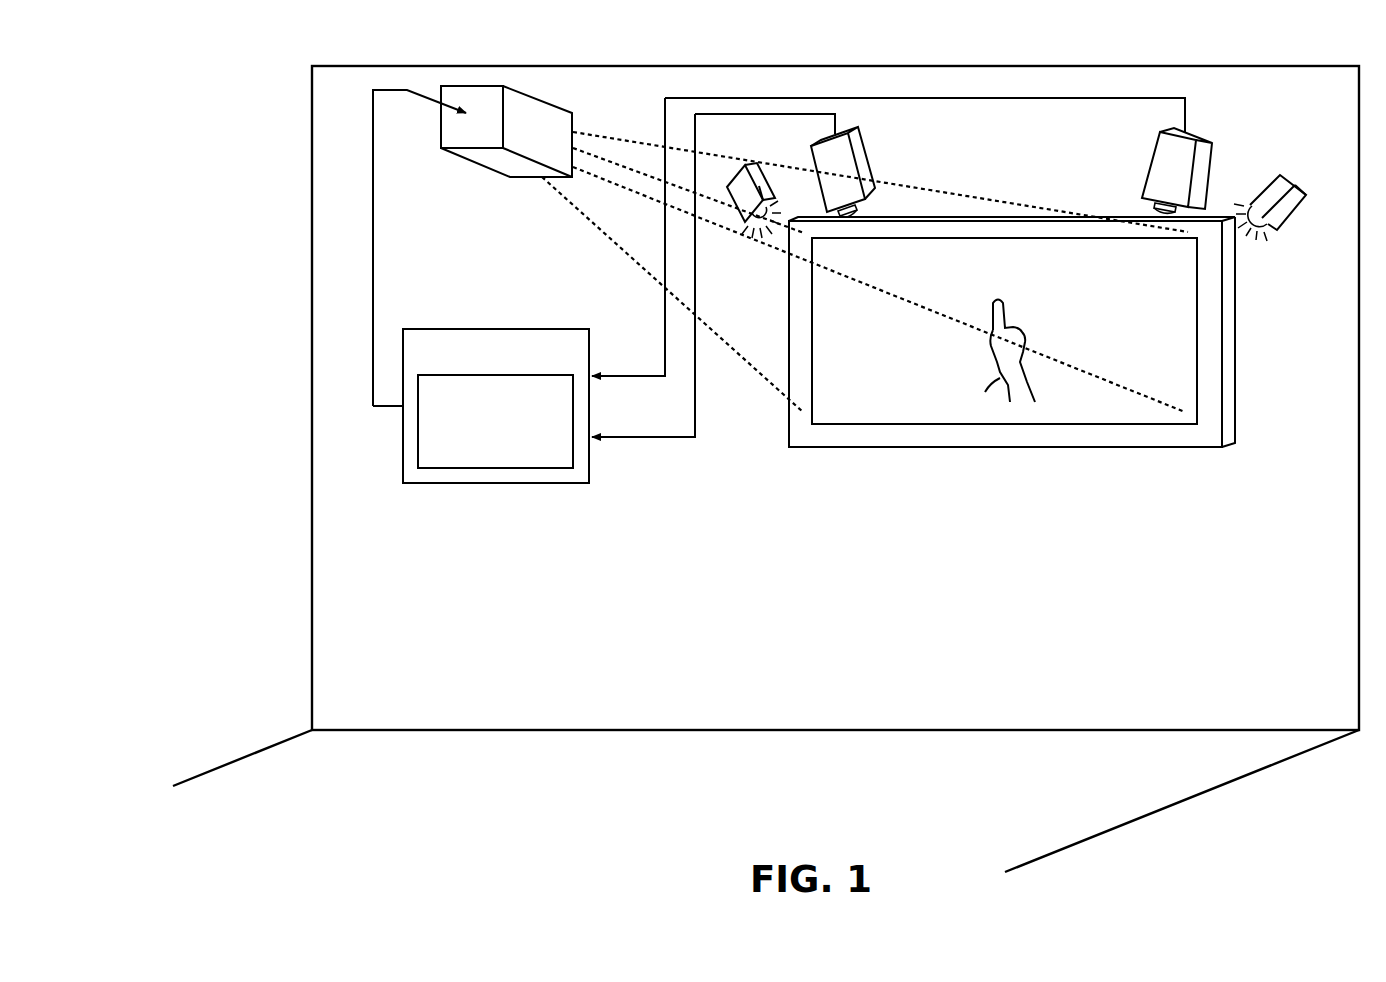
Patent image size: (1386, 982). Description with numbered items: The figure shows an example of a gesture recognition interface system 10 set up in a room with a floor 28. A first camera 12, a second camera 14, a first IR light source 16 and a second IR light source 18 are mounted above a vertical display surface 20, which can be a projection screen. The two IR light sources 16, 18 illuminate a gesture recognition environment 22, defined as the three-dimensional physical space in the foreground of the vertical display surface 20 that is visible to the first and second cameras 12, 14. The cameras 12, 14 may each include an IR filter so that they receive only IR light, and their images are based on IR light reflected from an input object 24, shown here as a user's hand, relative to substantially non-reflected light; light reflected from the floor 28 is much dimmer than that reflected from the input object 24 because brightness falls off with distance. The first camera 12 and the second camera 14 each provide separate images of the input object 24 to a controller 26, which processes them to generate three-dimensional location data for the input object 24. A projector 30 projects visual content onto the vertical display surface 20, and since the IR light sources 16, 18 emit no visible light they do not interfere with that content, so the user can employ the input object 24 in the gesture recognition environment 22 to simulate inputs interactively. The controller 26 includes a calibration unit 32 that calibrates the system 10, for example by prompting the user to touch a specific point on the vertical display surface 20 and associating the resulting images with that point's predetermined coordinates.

The gesture recognition interface system 10 is at (262, 78).
The first camera 12 is at (862, 145).
The second camera 14 is at (1198, 135).
The first IR light source 16 is at (762, 190).
The second IR light source 18 is at (1295, 175).
The vertical display surface 20 is at (1237, 313).
The gesture recognition environment 22 is at (1158, 413).
The input object 24 is at (985, 392).
The controller 26 is at (558, 328).
The floor 28 is at (785, 787).
The projector 30 is at (470, 160).
The calibration unit 32 is at (527, 468).